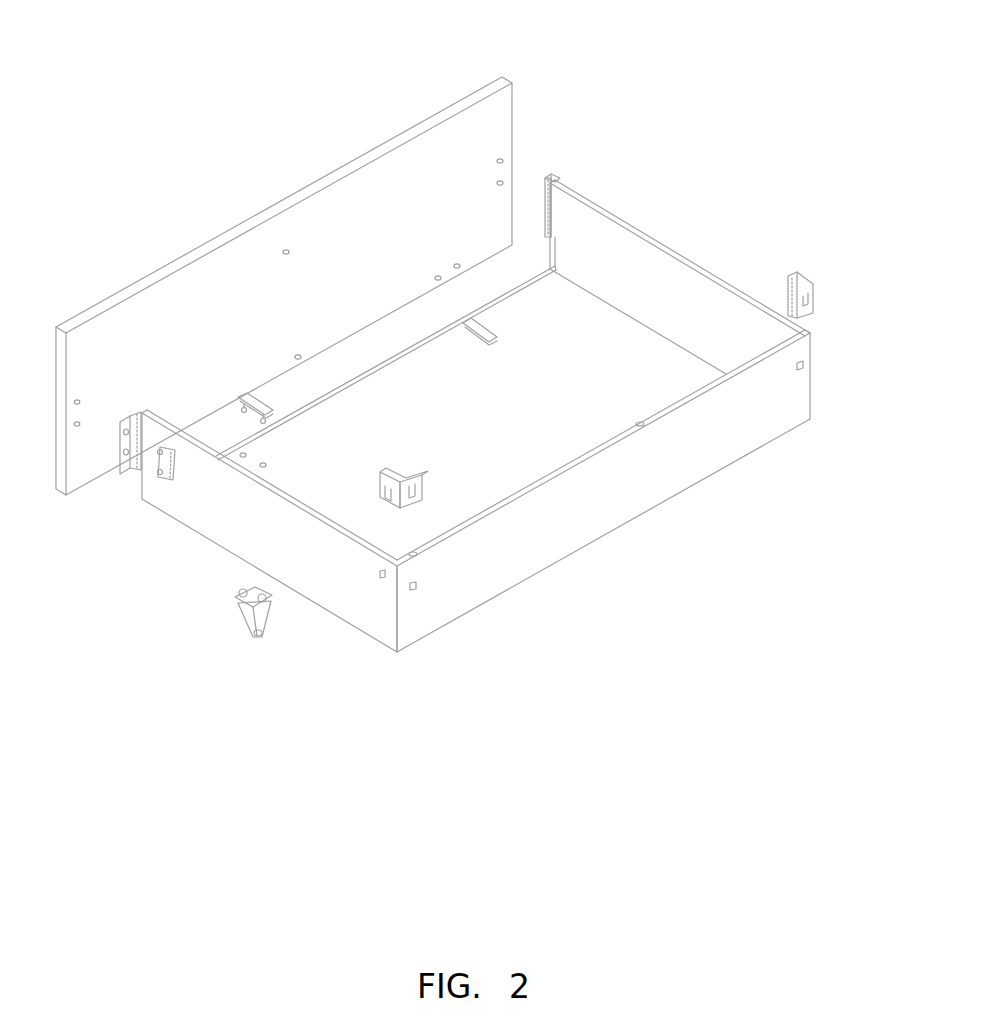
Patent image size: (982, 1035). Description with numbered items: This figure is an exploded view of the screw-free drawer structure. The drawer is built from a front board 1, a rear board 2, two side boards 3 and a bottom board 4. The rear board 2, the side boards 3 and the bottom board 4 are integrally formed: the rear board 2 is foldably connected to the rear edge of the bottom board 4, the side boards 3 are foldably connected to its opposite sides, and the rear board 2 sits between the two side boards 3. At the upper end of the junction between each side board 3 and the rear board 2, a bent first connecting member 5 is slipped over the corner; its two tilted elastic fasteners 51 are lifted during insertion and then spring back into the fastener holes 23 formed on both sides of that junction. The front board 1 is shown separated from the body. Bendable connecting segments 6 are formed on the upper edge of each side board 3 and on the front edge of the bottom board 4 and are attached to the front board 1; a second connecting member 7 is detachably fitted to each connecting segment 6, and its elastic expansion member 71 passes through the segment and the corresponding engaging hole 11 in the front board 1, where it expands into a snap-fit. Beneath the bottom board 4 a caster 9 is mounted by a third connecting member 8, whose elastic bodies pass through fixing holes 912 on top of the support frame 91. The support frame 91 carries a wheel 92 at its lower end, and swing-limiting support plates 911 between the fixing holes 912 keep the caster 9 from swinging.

The front board 1 is at (418, 160).
The engaging hole 11 is at (78, 428).
The rear board 2 is at (650, 490).
The side board 3 is at (693, 300).
The bottom board 4 is at (585, 318).
The first connecting member 5 is at (808, 300).
The elastic fastener 51 is at (422, 505).
The connecting segment 6 is at (558, 182).
The second connecting member 7 is at (172, 481).
The elastic expansion member 71 is at (240, 400).
The third connecting member 8 is at (255, 393).
The caster 9 is at (298, 747).
The support frame 91 is at (250, 612).
The swing-limiting support plate 911 is at (240, 593).
The fixing hole 912 is at (266, 602).
The wheel 92 is at (259, 637).
The fastener hole 23 is at (384, 578).